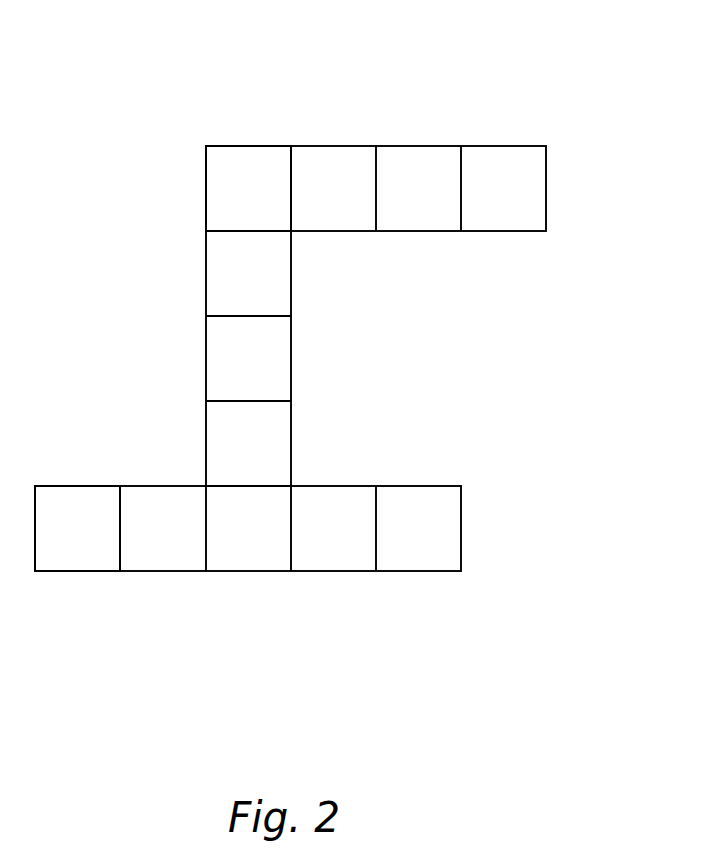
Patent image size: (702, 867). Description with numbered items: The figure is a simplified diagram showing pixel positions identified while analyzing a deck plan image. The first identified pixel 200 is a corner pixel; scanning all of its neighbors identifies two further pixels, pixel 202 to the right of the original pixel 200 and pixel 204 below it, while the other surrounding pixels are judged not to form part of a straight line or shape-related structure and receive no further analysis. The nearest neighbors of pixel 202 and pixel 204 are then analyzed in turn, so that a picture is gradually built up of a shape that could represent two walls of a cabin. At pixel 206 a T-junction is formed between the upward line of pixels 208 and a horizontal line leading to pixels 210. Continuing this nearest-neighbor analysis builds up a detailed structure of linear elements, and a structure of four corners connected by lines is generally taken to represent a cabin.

The pixel 200 is at (248, 170).
The pixel 202 is at (333, 145).
The pixel 204 is at (206, 275).
The pixel 206 is at (252, 571).
The upward line of pixels 208 is at (352, 346).
The pixels of horizontal line 210 is at (122, 592).